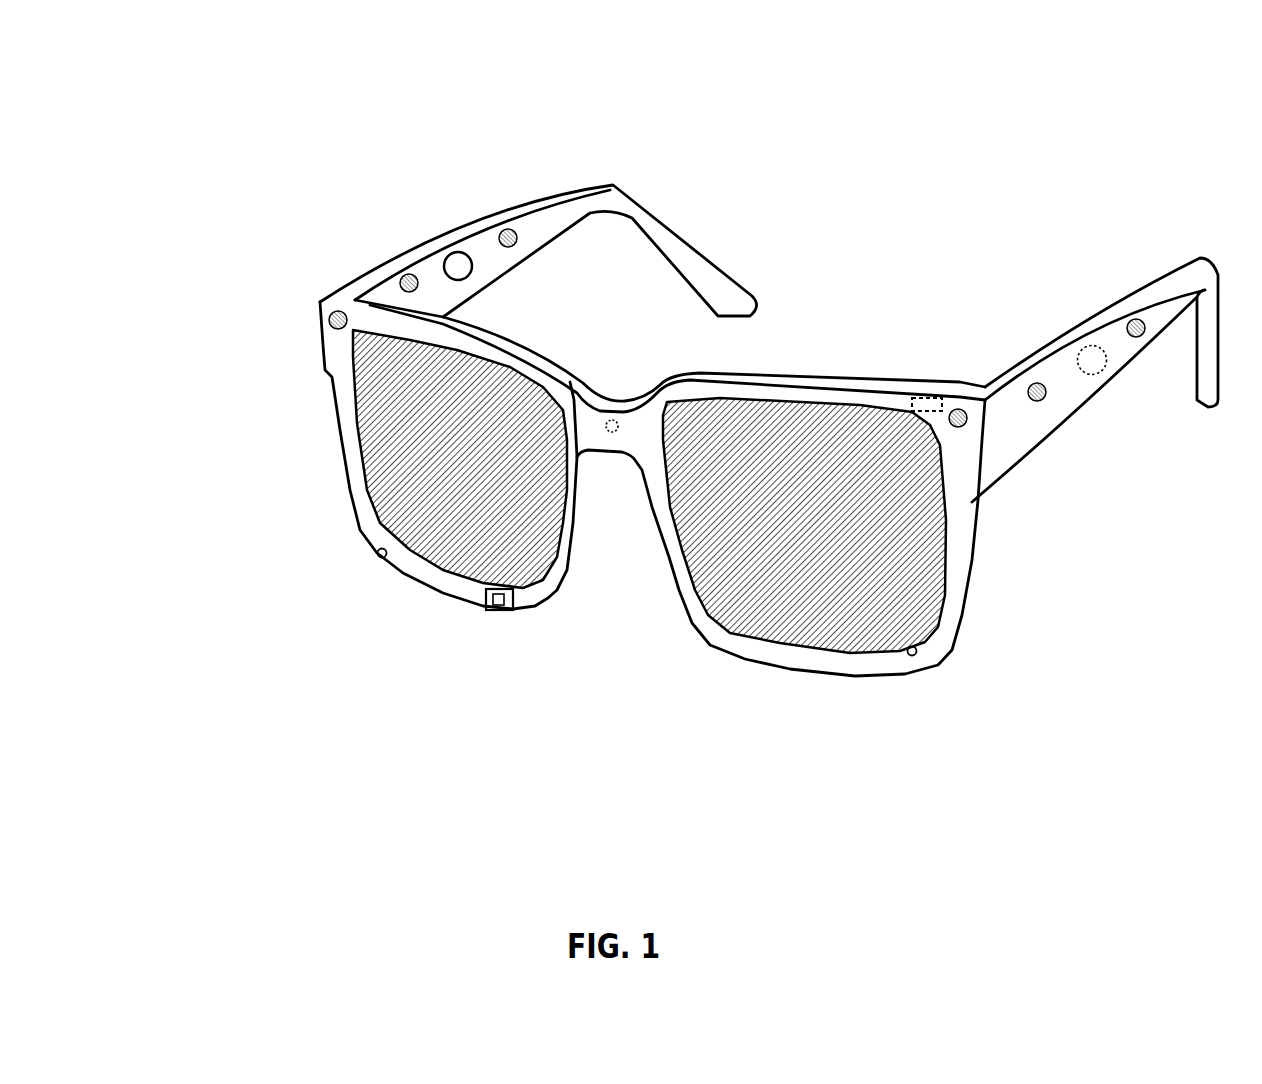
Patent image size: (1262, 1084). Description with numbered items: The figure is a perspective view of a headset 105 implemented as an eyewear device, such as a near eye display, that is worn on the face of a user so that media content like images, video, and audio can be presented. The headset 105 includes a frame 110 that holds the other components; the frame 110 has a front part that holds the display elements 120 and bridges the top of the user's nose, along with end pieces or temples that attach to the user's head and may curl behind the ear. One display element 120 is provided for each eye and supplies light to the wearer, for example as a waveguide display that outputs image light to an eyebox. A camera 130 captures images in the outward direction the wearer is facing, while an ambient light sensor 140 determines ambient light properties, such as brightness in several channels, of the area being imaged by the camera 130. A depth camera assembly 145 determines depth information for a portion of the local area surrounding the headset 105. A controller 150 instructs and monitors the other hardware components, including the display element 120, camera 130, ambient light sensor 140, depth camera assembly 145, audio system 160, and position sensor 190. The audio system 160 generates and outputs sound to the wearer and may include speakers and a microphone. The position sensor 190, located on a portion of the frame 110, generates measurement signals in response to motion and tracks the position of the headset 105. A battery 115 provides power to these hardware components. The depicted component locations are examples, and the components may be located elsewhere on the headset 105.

The headset 105 is at (226, 96).
The frame 110 is at (1200, 260).
The battery 115 is at (1087, 374).
The display element 120 is at (402, 460).
The camera 130 is at (497, 610).
The ambient light sensor (ALS) 140 is at (378, 557).
The depth camera assembly (DCA) 145 is at (908, 655).
The controller 150 is at (927, 402).
The audio system 160 is at (466, 254).
The position sensor 190 is at (611, 432).